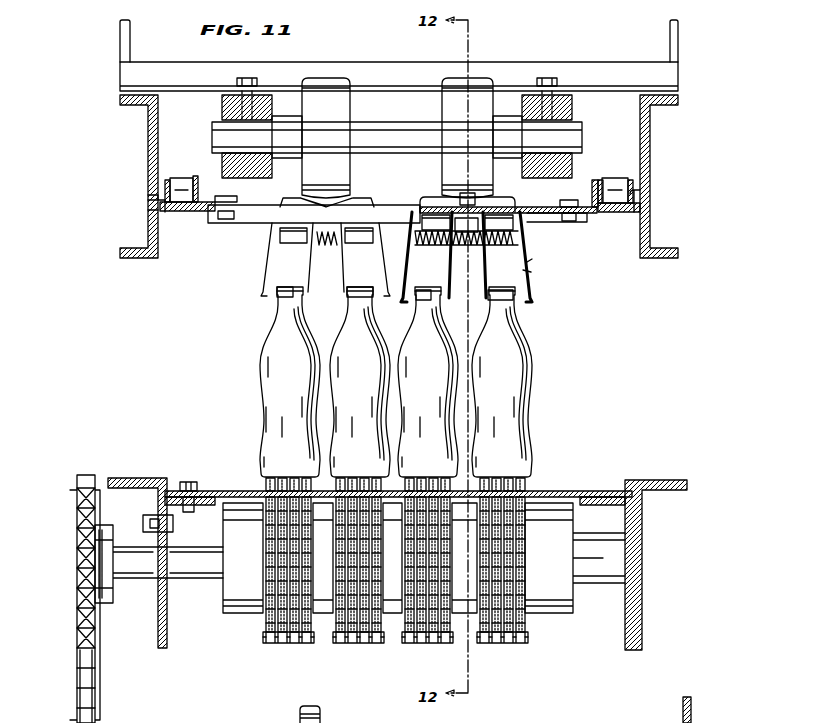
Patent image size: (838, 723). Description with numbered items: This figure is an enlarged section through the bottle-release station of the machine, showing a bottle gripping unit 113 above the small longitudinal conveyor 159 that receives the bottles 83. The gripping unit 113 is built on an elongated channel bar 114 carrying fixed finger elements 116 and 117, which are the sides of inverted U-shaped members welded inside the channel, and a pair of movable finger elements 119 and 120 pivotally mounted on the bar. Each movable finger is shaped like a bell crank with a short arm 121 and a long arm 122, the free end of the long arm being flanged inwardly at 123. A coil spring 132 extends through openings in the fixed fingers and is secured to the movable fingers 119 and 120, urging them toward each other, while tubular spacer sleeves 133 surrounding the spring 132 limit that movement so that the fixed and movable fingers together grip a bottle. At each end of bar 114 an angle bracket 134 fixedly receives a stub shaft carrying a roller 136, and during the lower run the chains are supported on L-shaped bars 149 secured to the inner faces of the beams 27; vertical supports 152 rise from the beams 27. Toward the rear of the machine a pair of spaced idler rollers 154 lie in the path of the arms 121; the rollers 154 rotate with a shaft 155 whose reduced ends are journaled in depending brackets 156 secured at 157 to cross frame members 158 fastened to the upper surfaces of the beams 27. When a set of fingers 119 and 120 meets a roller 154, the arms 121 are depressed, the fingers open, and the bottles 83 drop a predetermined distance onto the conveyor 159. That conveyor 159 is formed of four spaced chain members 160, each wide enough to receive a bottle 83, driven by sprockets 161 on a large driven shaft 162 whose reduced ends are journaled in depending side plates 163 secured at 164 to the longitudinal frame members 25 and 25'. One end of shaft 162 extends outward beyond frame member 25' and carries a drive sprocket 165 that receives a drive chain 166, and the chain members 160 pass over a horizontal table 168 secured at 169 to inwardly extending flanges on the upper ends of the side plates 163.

The vertical supports 152 is at (120, 40).
The idler rollers 154 is at (334, 78).
The cross frame members 158 is at (590, 62).
The securing point of brackets to cross frame members 157 is at (257, 80).
The shaft 155 is at (378, 120).
The depending brackets 156 is at (222, 110).
The beams 27 is at (148, 140).
The roller 136 is at (190, 172).
The angle bracket 134 is at (205, 203).
The L-shaped bars 149 is at (158, 198).
The channel bar 114 is at (250, 237).
The bottle gripping unit 113 is at (377, 225).
The short arm 121 is at (292, 200).
The finger element 119 is at (267, 255).
The finger element 120 is at (380, 260).
The tubular spacer sleeve 133 is at (293, 245).
The coil spring 132 is at (326, 246).
The long arm 122 is at (531, 272).
The inward flange 123 is at (392, 297).
The finger element 116 is at (303, 294).
The finger element 117 is at (471, 300).
The bottles 83 is at (300, 346).
The longitudinal frame member 25' is at (141, 550).
The longitudinal frame member 25 is at (656, 553).
The horizontal table or support 168 is at (548, 490).
The securing point of table to side plate flanges 169 is at (193, 482).
The securing point of side plates to frame members 164 is at (150, 515).
The drive sprocket 165 is at (78, 550).
The drive chain 166 is at (76, 684).
The driven shaft 162 is at (223, 606).
The side plates 163 is at (168, 645).
The sprockets 161 is at (265, 618).
The chain members 160 is at (265, 641).
The longitudinal conveyor 159 is at (374, 580).